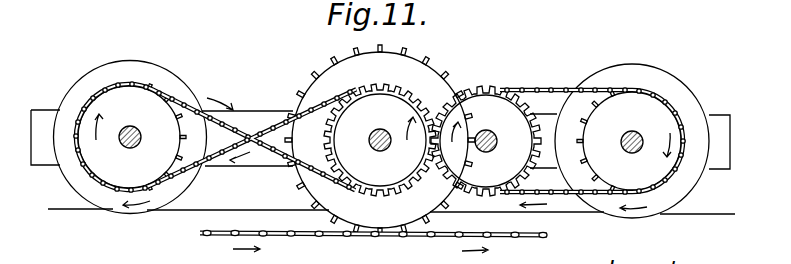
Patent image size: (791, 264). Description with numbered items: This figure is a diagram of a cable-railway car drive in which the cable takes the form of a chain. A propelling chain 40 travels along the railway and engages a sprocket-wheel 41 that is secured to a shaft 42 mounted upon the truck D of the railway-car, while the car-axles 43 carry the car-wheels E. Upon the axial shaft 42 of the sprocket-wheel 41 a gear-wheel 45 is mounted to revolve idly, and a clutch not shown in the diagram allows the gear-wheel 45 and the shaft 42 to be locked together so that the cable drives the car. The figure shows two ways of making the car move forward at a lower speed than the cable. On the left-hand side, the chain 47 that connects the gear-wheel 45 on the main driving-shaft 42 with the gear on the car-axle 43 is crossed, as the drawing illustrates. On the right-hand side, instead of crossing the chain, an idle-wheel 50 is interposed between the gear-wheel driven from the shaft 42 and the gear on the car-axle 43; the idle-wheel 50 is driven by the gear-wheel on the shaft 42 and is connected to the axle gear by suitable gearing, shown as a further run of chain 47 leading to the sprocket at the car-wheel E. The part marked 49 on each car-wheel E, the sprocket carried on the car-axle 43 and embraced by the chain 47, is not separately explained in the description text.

The conveyor chain 40 is at (303, 236).
The large toothed wheel 41 is at (380, 140).
The shaft of wheel 41 42 is at (368, 140).
The shaft of wheel E 43 is at (133, 132).
The sprocket wheel 45 is at (380, 140).
The drive chain 47 is at (379, 129).
The sprocket wheel of wheel E 49 is at (379, 138).
The gear wheel 50 is at (486, 141).
The bar D is at (383, 162).
The wheel E is at (382, 140).